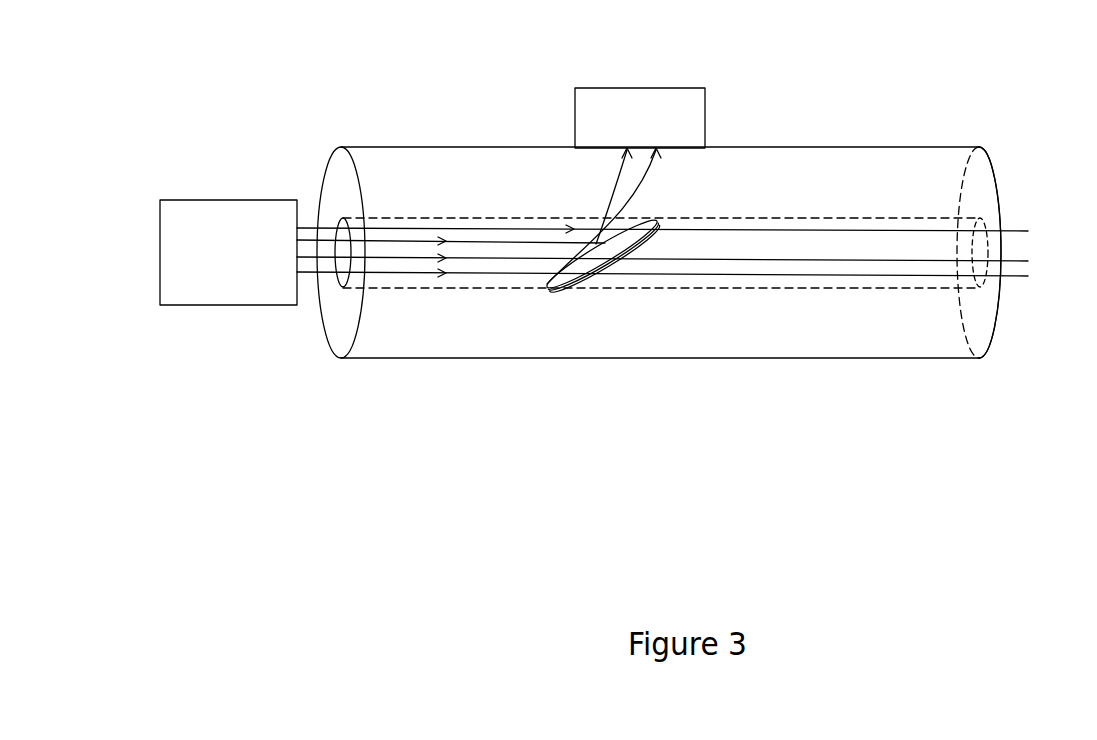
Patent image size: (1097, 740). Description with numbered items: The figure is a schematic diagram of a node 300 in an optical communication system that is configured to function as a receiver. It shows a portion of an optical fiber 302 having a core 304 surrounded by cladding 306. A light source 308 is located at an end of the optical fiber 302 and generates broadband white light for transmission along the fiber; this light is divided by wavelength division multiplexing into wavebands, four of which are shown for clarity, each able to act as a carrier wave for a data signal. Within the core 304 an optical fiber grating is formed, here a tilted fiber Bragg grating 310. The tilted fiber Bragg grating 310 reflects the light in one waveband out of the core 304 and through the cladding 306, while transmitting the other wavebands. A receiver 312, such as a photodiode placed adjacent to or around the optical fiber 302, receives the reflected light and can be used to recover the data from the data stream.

The node 300 is at (352, 400).
The optical fiber 302 is at (940, 360).
The core 304 is at (903, 220).
The cladding 306 is at (948, 157).
The light source 308 is at (173, 207).
The tilted fiber Bragg grating 310 is at (547, 288).
The receiver 312 is at (602, 88).